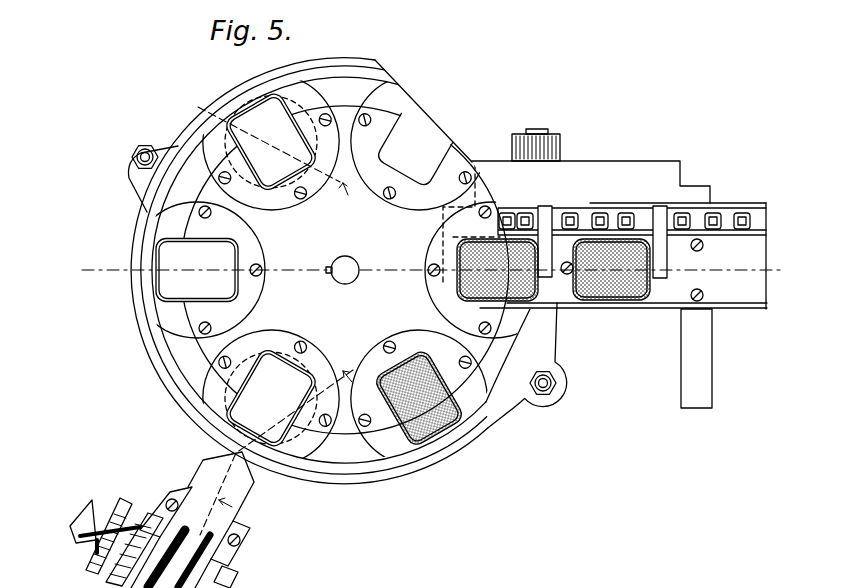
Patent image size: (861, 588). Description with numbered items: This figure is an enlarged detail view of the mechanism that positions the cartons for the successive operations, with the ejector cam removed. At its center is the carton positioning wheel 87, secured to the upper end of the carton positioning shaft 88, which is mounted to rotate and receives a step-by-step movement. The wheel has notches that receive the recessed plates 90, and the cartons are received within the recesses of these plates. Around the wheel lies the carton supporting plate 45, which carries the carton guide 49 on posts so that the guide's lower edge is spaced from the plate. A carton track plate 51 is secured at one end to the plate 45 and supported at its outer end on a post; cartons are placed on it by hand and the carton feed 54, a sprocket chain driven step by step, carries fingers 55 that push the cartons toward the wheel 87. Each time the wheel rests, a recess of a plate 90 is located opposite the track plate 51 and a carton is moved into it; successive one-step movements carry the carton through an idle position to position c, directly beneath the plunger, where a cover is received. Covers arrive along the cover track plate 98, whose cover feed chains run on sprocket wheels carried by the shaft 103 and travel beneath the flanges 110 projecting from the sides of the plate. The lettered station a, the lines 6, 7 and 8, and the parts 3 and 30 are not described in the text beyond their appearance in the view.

The article blank (stippled pad) 3 is at (637, 301).
The section line 6- 6 is at (430, 272).
The section line 7- 7 is at (273, 446).
The section line 8- 8 is at (275, 149).
The clamping nut on housing lug 30 is at (546, 394).
The carton supporting plate 45 is at (397, 92).
The carton guide 49 is at (437, 450).
The carton track plate 51 is at (746, 297).
The carton feed 54 is at (741, 212).
The fingers 55 is at (663, 227).
The carton positioning wheel 87 is at (252, 319).
The carton positioning shaft 88 is at (360, 269).
The recessed plates 90 is at (370, 365).
The cover track plate 98 is at (198, 478).
The shaft 103 is at (232, 587).
The flanges 110 is at (226, 556).
The station window a is at (278, 138).
The position c is at (270, 398).